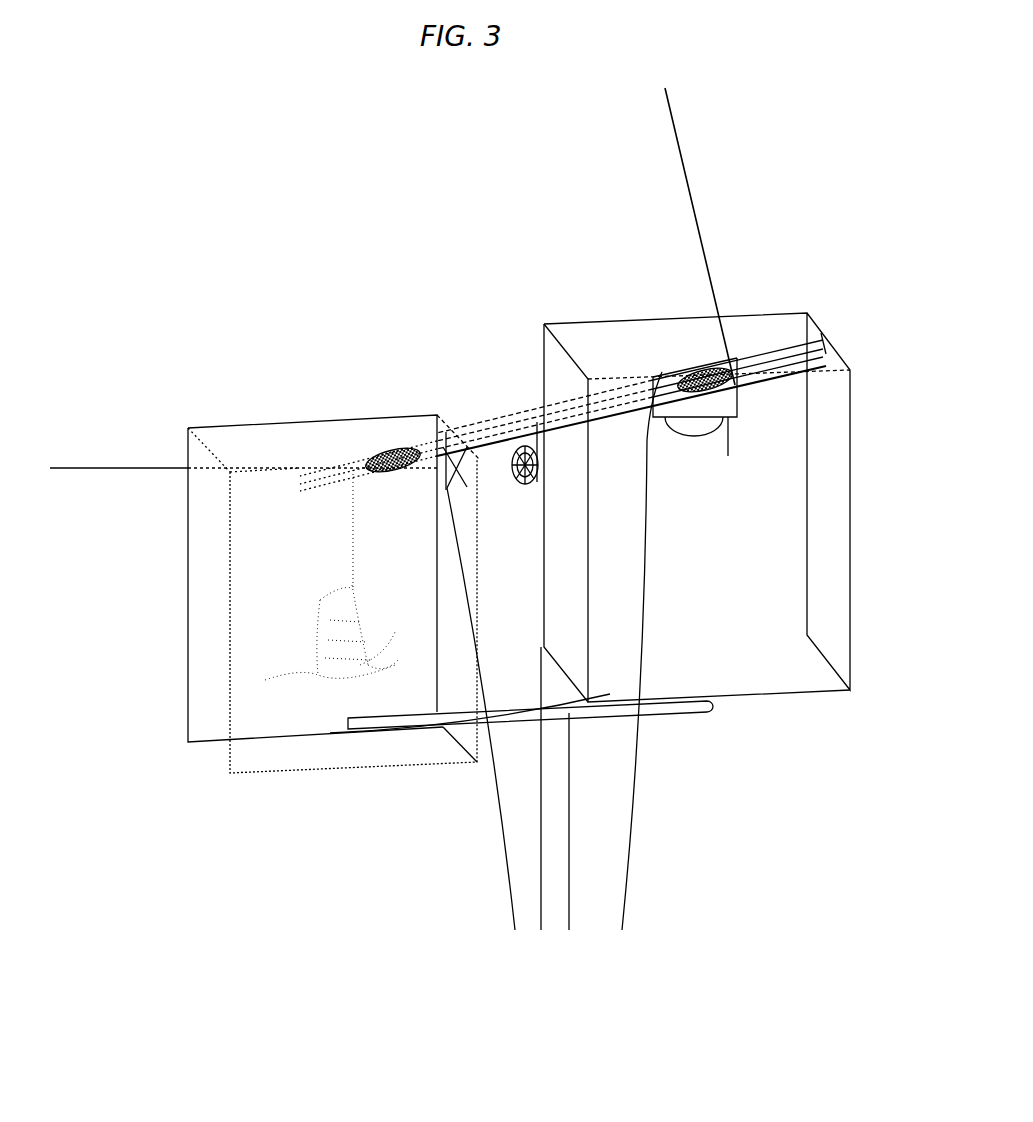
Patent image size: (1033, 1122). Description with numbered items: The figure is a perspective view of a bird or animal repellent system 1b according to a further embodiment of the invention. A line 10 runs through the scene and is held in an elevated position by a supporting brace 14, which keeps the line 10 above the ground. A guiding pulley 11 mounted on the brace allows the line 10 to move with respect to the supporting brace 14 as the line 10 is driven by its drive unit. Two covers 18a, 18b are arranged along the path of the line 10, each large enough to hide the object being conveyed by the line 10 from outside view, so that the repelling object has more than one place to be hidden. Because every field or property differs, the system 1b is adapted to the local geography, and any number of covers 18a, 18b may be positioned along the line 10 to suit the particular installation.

The bird or animal repellent system 1b is at (725, 212).
The line 10 is at (662, 372).
The guiding pulley 11 is at (512, 445).
The supporting brace 14 is at (563, 788).
The cover 18a is at (205, 610).
The cover 18b is at (825, 510).